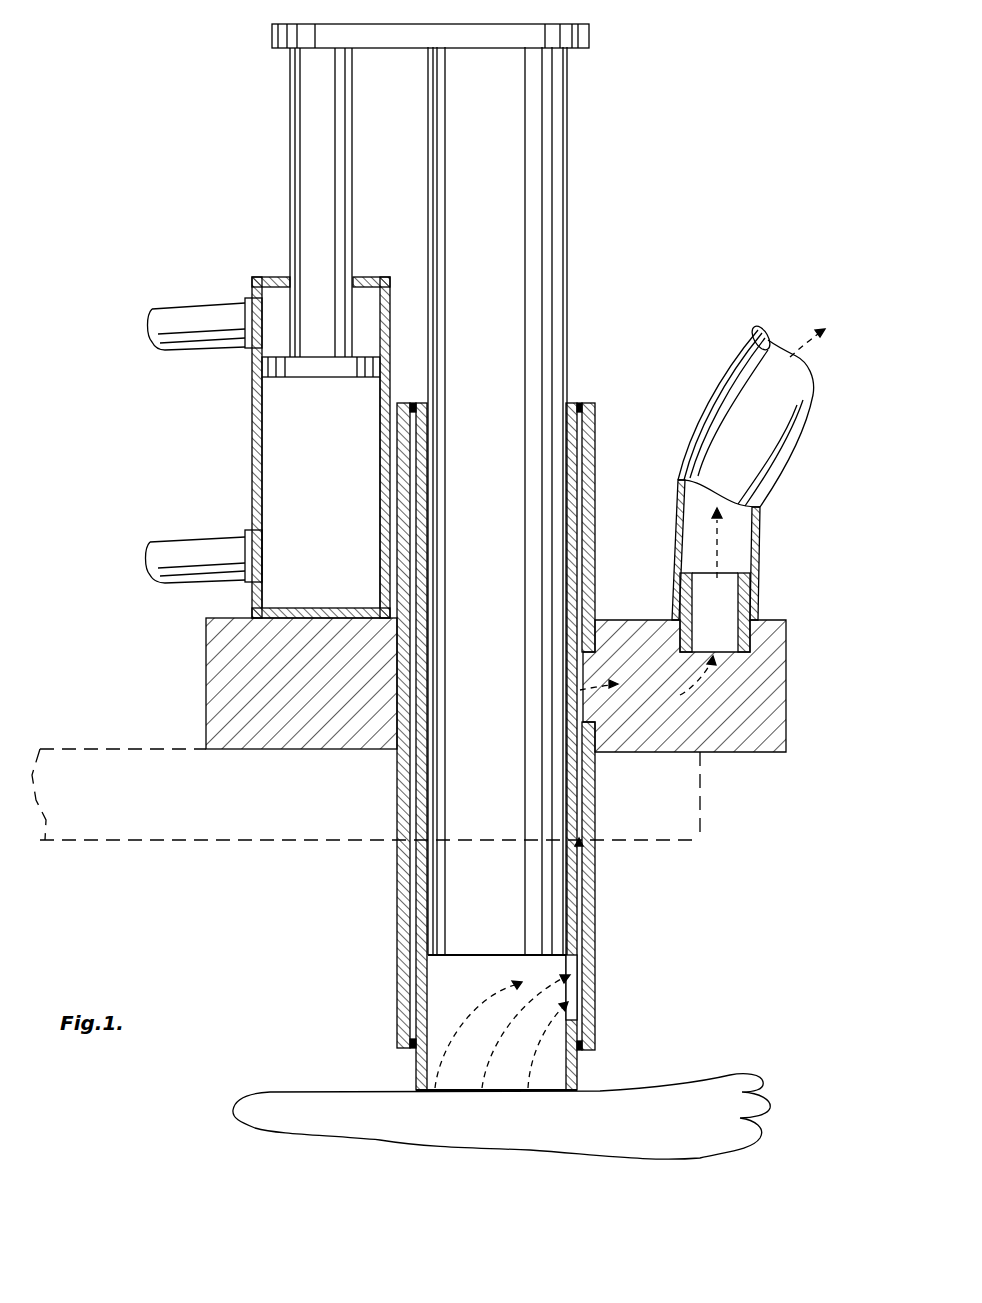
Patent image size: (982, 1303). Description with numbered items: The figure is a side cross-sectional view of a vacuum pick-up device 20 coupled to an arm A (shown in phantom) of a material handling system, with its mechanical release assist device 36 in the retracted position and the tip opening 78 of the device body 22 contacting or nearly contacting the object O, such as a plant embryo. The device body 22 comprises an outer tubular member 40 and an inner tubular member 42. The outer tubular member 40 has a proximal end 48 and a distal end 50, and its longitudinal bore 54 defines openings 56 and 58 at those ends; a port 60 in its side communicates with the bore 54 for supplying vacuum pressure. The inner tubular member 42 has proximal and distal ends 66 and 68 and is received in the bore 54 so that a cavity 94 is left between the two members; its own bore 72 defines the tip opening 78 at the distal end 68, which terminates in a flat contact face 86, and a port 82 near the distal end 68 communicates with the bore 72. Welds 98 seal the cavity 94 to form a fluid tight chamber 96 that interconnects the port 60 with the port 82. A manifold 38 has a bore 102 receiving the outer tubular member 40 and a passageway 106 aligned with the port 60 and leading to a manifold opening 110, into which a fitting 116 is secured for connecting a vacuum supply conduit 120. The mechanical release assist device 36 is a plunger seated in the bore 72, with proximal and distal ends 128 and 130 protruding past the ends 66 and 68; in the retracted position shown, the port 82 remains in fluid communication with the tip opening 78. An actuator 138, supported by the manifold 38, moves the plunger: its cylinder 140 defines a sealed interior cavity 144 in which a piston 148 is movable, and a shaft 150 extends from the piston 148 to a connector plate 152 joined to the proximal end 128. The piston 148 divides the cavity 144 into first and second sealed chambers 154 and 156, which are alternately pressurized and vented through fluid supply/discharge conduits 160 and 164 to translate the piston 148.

The vacuum pick-up device 20 is at (676, 160).
The device body 22 is at (592, 500).
The mechanical release assist device 36 is at (546, 501).
The manifold 38 is at (710, 680).
The outer tubular member 40 is at (494, 720).
The inner tubular member 42 is at (494, 720).
The proximal end 48 is at (503, 694).
The distal end 50 is at (503, 694).
The bore 54 is at (498, 694).
The opening 56 is at (491, 721).
The opening 58 is at (498, 694).
The port 60 is at (592, 662).
The proximal end 66 is at (494, 720).
The distal end 68 is at (491, 752).
The bore 72 is at (491, 752).
The tip opening 78 is at (455, 752).
The port 82 is at (494, 721).
The flat contact face 86 is at (416, 1098).
The cavity 94 is at (494, 721).
The fluid tight chamber 96 is at (494, 721).
The welds 98 is at (580, 403).
The bore 102 is at (400, 668).
The passageway 106 is at (683, 680).
The manifold opening 110 is at (710, 680).
The fitting 116 is at (752, 588).
The vacuum supply conduit 120 is at (760, 540).
The proximal end 128 is at (546, 501).
The distal end 130 is at (512, 928).
The actuator 138 is at (226, 333).
The cylinder 140 is at (279, 447).
The interior cavity 144 is at (262, 436).
The piston 148 is at (290, 372).
The shaft 150 is at (290, 160).
The connector plate 152 is at (272, 37).
The first sealed chamber 154 is at (278, 300).
The second sealed chamber 156 is at (321, 492).
The fluid supply/discharge conduit 160 is at (186, 304).
The fluid supply/discharge conduit 164 is at (200, 543).
The arm A is at (125, 749).
The object O is at (615, 1155).